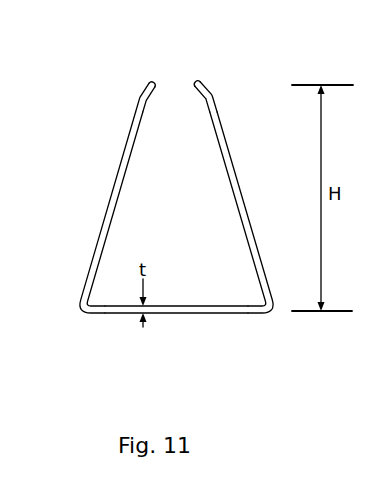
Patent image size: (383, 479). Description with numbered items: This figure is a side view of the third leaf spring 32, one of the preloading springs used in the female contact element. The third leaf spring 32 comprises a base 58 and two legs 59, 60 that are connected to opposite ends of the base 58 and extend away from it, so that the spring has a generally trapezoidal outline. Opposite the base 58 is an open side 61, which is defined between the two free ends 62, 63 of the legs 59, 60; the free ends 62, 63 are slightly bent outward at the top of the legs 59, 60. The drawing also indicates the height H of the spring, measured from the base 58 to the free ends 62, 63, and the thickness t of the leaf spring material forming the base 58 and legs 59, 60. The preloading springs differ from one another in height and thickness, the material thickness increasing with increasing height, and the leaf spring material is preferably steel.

The third leaf spring 32 is at (157, 197).
The base 58 is at (209, 314).
The leg 59 is at (101, 201).
The leg 60 is at (238, 165).
The open side 61 is at (176, 71).
The free end 62 is at (151, 81).
The free end 63 is at (199, 81).